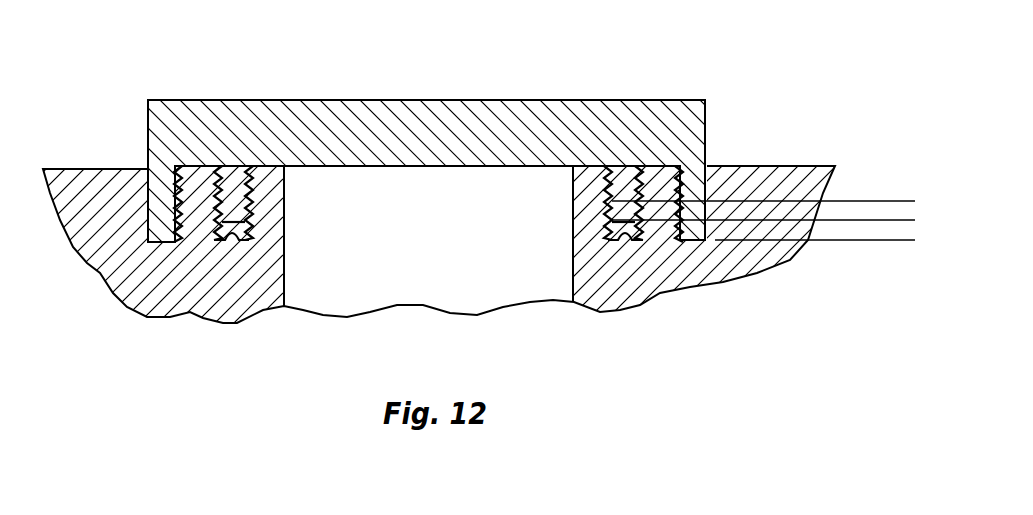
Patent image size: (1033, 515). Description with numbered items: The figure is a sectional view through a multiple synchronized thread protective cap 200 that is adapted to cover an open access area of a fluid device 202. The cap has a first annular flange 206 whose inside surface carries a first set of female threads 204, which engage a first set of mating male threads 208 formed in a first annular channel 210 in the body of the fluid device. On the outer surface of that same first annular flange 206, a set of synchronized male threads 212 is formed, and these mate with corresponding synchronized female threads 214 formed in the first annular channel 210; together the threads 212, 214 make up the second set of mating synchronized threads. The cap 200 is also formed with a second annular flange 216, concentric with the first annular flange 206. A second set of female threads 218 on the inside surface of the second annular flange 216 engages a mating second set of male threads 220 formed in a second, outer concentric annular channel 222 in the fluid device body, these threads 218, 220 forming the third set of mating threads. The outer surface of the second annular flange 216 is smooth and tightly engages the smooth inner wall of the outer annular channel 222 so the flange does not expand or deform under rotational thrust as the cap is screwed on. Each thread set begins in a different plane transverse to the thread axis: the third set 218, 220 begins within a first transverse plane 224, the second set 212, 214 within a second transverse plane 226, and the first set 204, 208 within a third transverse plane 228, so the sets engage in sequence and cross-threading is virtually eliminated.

The multiple synchronized thread protective cap 200 is at (407, 133).
The fluid device 202 is at (767, 160).
The first set of female threads 204 is at (607, 217).
The first annular flange 206 is at (233, 200).
The first set of mating male threads 208 is at (620, 187).
The first annular channel 210 is at (227, 250).
The synchronized male threads 212 is at (212, 213).
The synchronized female threads 214 is at (229, 186).
The second annular flange 216 is at (163, 195).
The second set of female threads 218 is at (192, 202).
The second set of male threads 220 is at (152, 163).
The second outer concentric annular channel 222 is at (165, 242).
The first transverse plane 224 is at (890, 240).
The second transverse plane 226 is at (847, 220).
The third transverse plane 228 is at (863, 200).